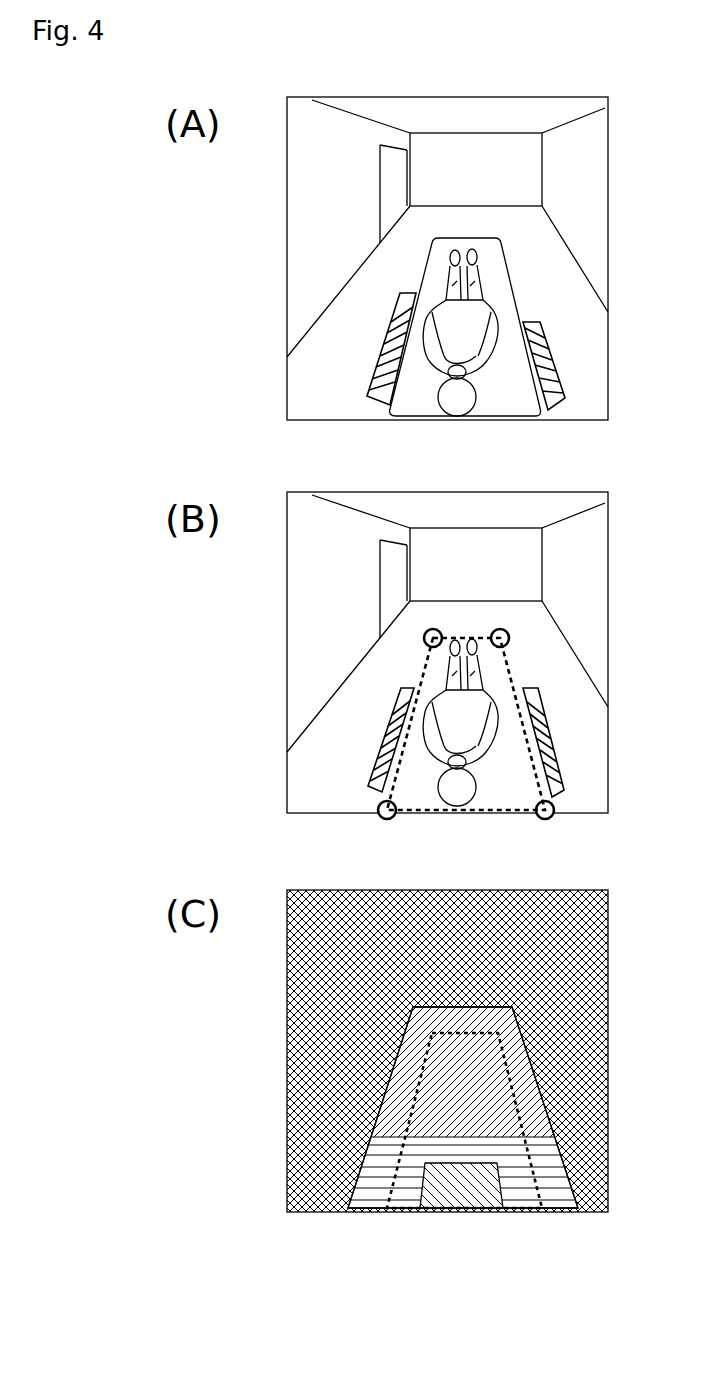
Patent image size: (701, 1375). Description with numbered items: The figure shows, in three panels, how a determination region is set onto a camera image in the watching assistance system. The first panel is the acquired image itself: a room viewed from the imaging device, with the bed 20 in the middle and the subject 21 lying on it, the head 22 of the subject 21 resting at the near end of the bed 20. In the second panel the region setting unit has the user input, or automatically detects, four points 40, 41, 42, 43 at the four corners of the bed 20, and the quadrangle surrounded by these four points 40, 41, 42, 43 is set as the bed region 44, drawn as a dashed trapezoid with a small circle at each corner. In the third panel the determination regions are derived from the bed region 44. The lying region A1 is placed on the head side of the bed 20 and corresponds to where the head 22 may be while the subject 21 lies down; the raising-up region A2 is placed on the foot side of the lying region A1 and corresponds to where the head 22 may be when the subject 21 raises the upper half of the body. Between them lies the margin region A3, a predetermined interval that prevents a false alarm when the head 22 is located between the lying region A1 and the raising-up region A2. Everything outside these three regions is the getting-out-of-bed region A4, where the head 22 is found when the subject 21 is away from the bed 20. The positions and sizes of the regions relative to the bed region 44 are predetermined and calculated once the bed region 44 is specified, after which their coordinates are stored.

The bed 20 is at (416, 293).
The subject 21 is at (467, 335).
The head 22 is at (492, 372).
The point 40 is at (417, 629).
The point 41 is at (515, 629).
The point 42 is at (370, 806).
The point 43 is at (565, 806).
The bed region 44 is at (480, 734).
The lying region A1 is at (462, 1185).
The raising-up region A2 is at (461, 1072).
The margin region A3 is at (463, 1168).
The getting-out-of-bed region A4 is at (350, 1051).